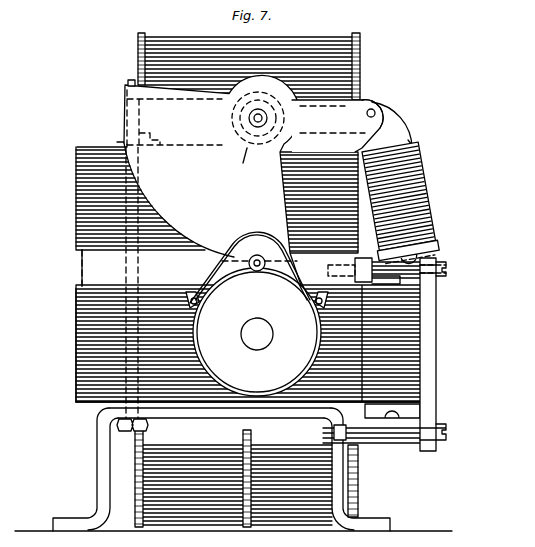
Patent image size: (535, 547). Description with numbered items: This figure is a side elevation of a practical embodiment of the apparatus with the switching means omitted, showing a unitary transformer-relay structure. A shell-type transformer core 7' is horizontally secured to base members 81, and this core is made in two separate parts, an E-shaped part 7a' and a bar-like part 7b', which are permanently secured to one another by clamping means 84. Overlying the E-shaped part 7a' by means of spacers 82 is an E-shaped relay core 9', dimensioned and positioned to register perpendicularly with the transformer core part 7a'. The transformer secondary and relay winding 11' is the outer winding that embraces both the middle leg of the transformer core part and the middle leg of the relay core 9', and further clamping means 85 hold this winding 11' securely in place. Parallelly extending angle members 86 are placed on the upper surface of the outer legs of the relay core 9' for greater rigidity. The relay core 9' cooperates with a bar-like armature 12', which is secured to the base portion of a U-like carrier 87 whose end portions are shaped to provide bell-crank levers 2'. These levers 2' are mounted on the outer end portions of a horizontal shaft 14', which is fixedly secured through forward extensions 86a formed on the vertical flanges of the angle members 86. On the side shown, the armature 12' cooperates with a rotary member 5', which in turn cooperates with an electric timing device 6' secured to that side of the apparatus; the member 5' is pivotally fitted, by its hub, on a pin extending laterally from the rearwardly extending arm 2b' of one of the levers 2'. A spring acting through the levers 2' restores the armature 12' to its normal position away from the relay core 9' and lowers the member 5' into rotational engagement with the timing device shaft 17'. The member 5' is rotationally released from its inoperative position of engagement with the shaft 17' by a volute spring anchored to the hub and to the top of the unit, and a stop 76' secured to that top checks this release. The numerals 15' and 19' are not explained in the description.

The transformer secondary and relay winding 11' is at (264, 58).
The stop 76' is at (117, 69).
The angle members 86 is at (83, 142).
The cam shaft 15' is at (245, 118).
The cam hub 19' is at (243, 165).
The relay core 9' is at (127, 198).
The spacers 82 is at (84, 268).
The rotary member 5' is at (214, 186).
The timing device shaft 17' is at (250, 258).
The electric timing device 6' is at (257, 332).
The rearwardly extending arm 2b' is at (339, 110).
The horizontal shaft 14' is at (387, 95).
The forward extensions 86a is at (383, 118).
The bell-crank levers 2' is at (398, 125).
The U-like carrier 87 is at (413, 148).
The armature 12' is at (410, 205).
The clamping means 85 is at (385, 262).
The bar-like part 7b' is at (272, 277).
The clamping means 84 is at (437, 372).
The transformer core 7' is at (64, 345).
The E-shaped part 7a' is at (228, 387).
The base members 81 is at (100, 468).